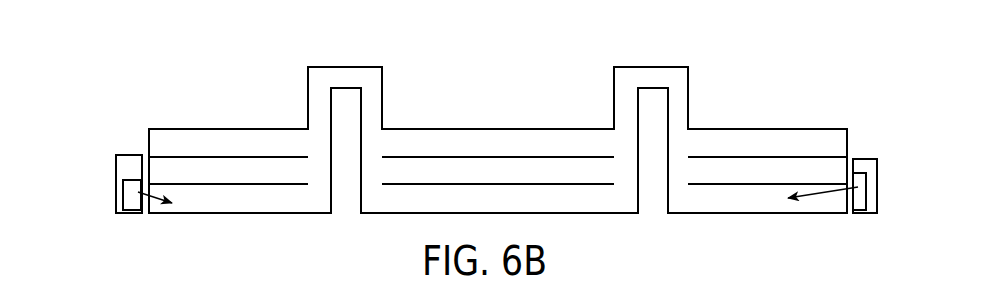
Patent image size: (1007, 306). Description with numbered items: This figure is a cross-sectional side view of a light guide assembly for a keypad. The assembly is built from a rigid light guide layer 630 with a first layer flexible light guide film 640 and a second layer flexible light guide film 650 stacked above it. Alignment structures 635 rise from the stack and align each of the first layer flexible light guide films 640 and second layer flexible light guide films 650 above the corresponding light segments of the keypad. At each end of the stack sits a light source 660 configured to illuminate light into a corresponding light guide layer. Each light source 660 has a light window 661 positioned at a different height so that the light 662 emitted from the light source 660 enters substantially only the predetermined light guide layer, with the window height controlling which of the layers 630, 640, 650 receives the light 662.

The rigid light guide layer 630 is at (418, 211).
The first layer flexible light guide film 640 is at (476, 181).
The second layer flexible light guide film 650 is at (526, 152).
The alignment structure 635 is at (359, 76).
The light source 660 is at (120, 171).
The light window 661 is at (133, 215).
The light 662 is at (168, 215).